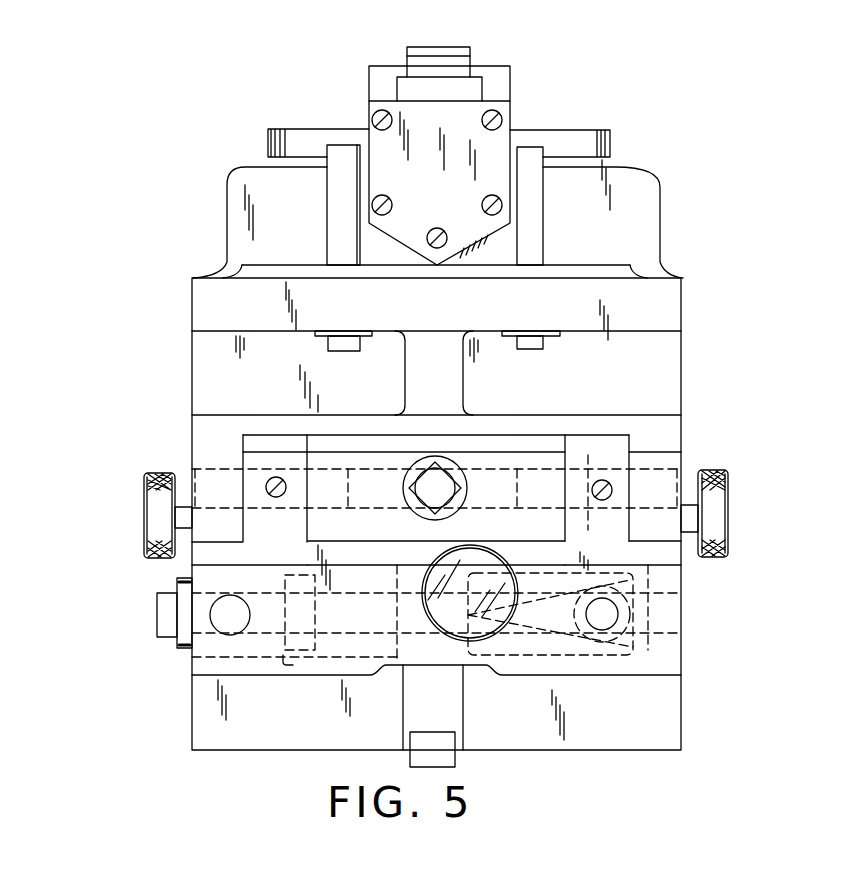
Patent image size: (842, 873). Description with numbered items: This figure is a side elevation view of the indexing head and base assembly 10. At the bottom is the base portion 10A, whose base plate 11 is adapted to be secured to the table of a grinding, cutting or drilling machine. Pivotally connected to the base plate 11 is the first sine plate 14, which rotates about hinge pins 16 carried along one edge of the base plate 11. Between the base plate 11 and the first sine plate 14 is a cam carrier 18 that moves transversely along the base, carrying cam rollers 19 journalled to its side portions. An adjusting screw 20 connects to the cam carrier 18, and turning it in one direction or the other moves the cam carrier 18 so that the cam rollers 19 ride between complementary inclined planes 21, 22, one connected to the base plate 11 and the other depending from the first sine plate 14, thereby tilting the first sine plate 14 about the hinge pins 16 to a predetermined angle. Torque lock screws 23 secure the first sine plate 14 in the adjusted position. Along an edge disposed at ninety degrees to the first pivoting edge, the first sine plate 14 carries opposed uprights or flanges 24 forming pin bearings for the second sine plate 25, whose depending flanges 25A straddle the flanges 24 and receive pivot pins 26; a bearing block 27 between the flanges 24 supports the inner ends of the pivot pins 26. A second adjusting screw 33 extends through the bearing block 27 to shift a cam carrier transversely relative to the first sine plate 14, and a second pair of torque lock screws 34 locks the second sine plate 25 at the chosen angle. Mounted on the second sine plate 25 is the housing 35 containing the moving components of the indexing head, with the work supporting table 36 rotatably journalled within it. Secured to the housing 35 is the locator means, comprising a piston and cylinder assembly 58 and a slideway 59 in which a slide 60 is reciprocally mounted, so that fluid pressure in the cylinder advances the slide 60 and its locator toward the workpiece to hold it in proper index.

The indexing head and base assembly 10 is at (690, 185).
The base portion 10A is at (705, 653).
The base plate 11 is at (668, 707).
The first sine plate 14 is at (670, 598).
The hinge pins 16 is at (228, 620).
The cam carrier 18 is at (633, 600).
The cam rollers 19 is at (627, 620).
The adjusting screw 20 is at (156, 620).
The inclined plane 21 is at (536, 614).
The inclined plane 22 is at (560, 600).
The torque lock screws 23 is at (483, 563).
The uprights or flanges 24 is at (252, 463).
The second sine plate 25 is at (658, 425).
The depending flanges 25A is at (218, 535).
The pivot pins 26 is at (210, 482).
The bearing block 27 is at (540, 457).
The second adjusting screw 33 is at (452, 505).
The second pair of torque lock screws 34 is at (146, 512).
The housing 35 is at (657, 243).
The work supporting table 36 is at (610, 133).
The piston and cylinder assembly 58 is at (510, 195).
The slideway 59 is at (497, 82).
The slide 60 is at (457, 48).